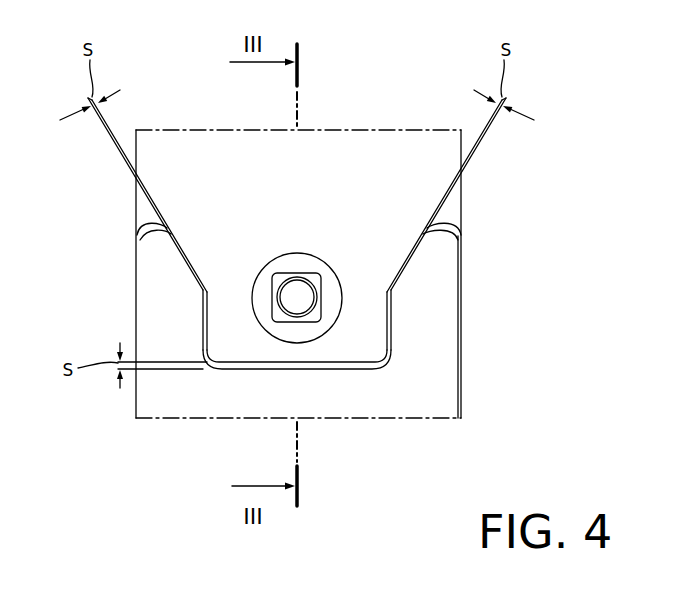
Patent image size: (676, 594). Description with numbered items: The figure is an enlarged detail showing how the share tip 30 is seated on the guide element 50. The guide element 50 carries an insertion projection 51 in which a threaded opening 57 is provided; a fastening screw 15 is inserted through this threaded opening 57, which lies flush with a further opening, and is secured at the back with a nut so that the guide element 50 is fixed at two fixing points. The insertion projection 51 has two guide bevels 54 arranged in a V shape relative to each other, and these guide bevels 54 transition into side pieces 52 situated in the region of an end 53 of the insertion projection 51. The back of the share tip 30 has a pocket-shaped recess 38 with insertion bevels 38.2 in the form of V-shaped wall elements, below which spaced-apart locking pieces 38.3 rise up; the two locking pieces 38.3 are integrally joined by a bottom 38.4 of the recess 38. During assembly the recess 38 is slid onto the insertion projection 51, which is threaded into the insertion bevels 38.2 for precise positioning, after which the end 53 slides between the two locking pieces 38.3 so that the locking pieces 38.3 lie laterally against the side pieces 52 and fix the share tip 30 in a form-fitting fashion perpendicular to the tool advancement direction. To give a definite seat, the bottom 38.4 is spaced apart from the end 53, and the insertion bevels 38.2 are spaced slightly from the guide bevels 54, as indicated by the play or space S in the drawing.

The fastening screw 15 is at (303, 298).
The share tip 30 is at (446, 262).
The recess 38 is at (466, 212).
The insertion bevels 38.2 is at (182, 246).
The locking pieces 38.3 is at (214, 292).
The bottom 38.4 is at (366, 369).
The guide element 50 is at (309, 237).
The insertion projection 51 is at (377, 337).
The side pieces 52 is at (200, 308).
The end 53 is at (243, 368).
The guide bevels 54 is at (155, 208).
The threaded opening 57 is at (312, 275).